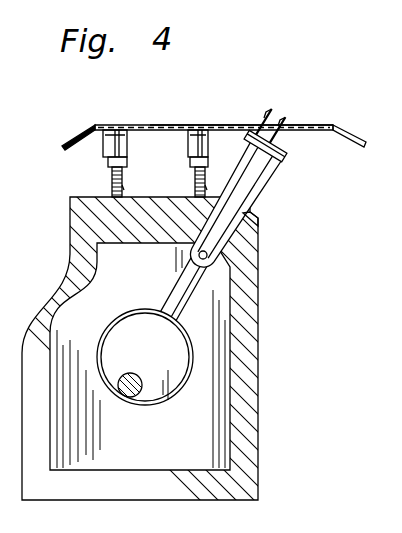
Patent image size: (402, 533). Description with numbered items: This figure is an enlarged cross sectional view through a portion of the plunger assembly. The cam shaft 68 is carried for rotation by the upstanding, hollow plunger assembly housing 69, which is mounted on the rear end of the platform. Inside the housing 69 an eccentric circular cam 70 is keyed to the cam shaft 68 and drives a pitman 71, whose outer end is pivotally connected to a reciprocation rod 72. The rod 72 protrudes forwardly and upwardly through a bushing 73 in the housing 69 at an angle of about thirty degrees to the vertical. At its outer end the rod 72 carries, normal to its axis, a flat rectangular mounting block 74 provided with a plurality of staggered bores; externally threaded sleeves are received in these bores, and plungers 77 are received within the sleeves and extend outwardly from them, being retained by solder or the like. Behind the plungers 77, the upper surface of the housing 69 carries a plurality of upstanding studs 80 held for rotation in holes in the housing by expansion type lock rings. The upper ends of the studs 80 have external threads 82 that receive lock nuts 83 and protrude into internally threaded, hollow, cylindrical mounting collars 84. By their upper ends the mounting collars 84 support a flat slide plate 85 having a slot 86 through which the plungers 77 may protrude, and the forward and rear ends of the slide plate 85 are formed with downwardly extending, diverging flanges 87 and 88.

The cam shaft 68 is at (137, 368).
The plunger assembly housing 69 is at (298, 372).
The eccentric circular cam 70 is at (170, 388).
The pitman 71 is at (178, 294).
The reciprocation rod 72 is at (252, 204).
The bushing 73 is at (248, 223).
The mounting block 74 is at (283, 160).
The plungers 77 is at (276, 116).
The studs 80 is at (206, 192).
The external threads 82 is at (195, 184).
The lock nuts 83 is at (190, 162).
The mounting collars 84 is at (196, 130).
The slide plate 85 is at (166, 126).
The slot 86 is at (247, 126).
The flange 87 is at (352, 138).
The flange 88 is at (69, 141).